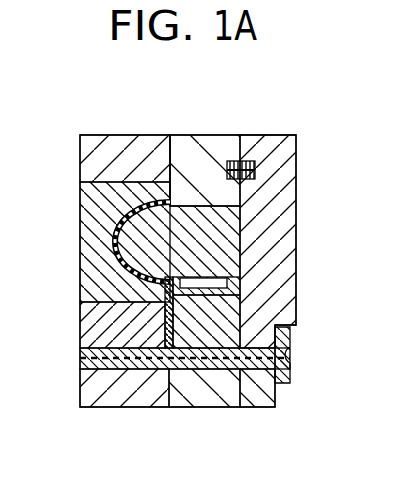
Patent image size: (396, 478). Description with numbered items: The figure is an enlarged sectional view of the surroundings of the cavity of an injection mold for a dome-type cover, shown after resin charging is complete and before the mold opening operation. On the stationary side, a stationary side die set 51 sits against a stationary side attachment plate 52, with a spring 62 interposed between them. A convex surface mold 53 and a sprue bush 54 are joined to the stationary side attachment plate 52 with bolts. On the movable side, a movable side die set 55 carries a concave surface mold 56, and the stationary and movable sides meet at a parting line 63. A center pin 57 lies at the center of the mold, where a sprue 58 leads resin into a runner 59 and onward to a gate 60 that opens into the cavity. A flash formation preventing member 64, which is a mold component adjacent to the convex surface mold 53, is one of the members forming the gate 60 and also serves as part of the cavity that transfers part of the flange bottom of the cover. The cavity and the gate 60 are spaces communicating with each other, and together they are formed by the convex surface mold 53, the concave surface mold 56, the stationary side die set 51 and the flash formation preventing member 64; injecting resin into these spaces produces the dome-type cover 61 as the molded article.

The stationary side die set 51 is at (213, 148).
The stationary side attachment plate 52 is at (290, 157).
The convex surface mold 53 is at (255, 235).
The sprue bush 54 is at (292, 345).
The movable side die set 55 is at (110, 150).
The concave surface mold 56 is at (88, 203).
The center pin 57 is at (88, 353).
The sprue 58 is at (213, 358).
The runner 59 is at (243, 312).
The gate 60 is at (112, 288).
The dome-type cover 61 is at (112, 240).
The spring 62 is at (253, 160).
The parting line 63 is at (170, 150).
The flash formation preventing member 64 is at (243, 286).